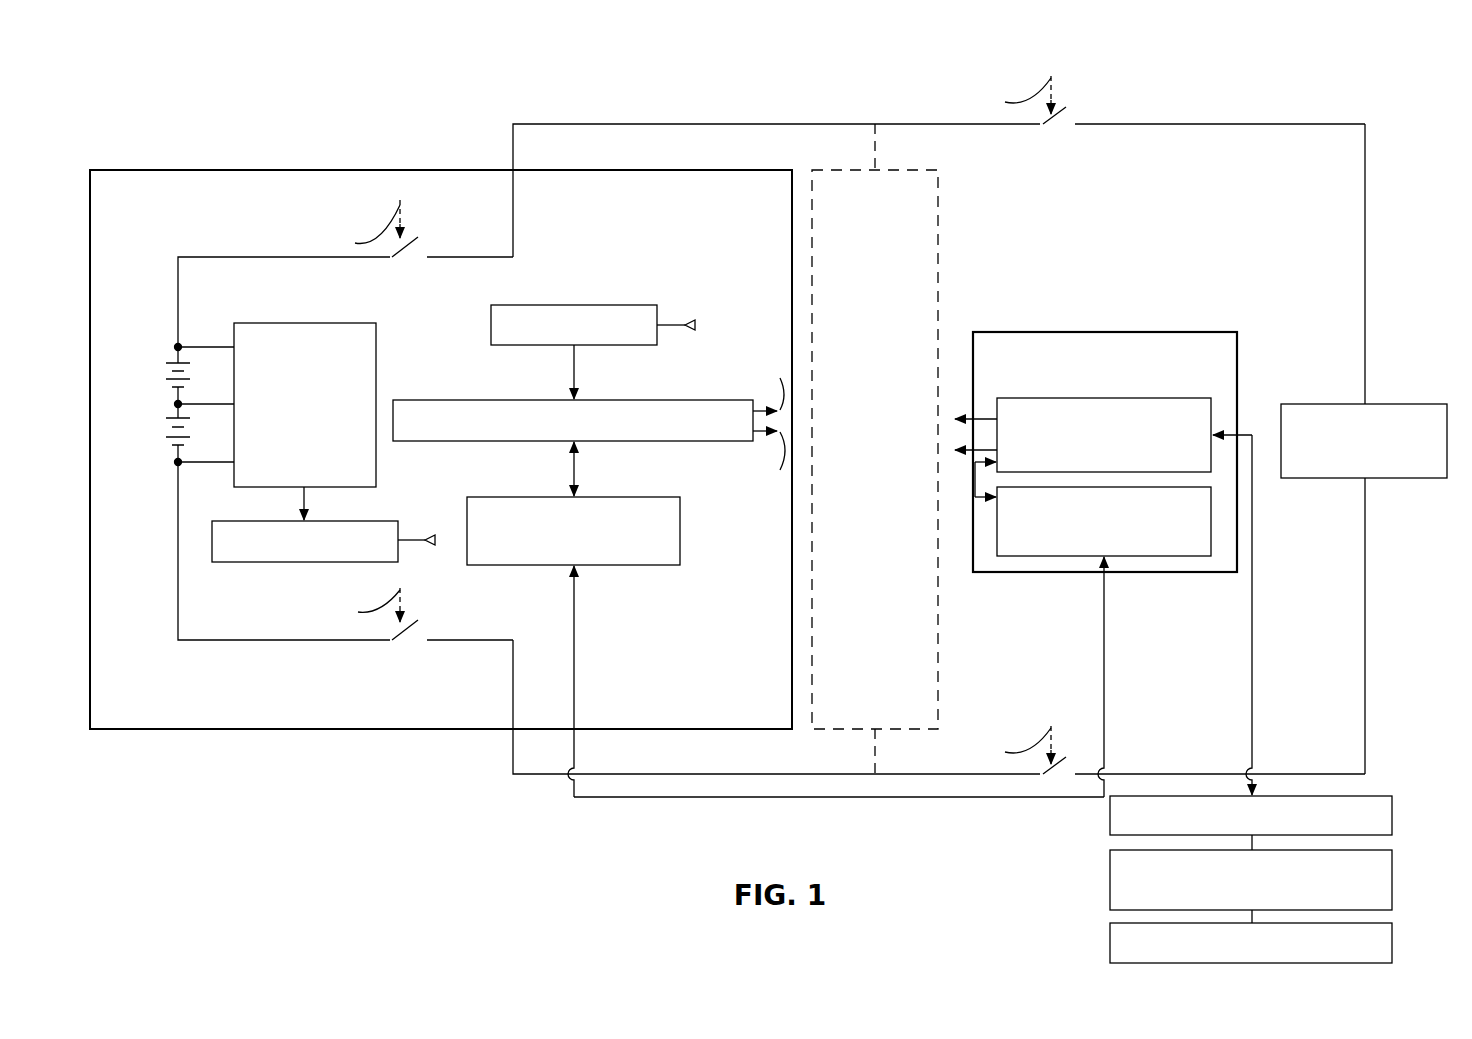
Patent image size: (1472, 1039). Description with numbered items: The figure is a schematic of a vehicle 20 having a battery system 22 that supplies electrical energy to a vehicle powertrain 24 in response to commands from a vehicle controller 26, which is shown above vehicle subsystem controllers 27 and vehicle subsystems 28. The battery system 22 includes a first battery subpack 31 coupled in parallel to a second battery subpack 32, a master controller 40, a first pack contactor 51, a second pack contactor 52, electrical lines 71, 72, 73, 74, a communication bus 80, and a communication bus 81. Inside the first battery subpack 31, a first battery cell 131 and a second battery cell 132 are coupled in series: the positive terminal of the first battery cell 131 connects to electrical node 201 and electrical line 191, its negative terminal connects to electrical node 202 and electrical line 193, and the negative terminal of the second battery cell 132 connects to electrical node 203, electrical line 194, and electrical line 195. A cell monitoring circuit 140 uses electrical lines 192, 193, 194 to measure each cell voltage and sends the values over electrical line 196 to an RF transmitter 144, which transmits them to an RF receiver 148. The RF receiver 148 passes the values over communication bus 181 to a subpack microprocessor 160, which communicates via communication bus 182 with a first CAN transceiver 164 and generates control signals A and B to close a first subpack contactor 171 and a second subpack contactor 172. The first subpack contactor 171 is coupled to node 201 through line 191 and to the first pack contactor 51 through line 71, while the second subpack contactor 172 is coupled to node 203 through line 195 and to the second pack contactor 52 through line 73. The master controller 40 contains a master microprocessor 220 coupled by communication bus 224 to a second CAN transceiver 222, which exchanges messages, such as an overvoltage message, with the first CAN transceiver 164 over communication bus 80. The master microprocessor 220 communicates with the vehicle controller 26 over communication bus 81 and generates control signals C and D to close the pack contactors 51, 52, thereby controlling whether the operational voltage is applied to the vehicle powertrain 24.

The vehicle 20 is at (1340, 84).
The battery system 22 is at (1208, 122).
The vehicle powertrain 24 is at (1333, 403).
The vehicle controller 26 is at (1392, 815).
The vehicle subsystem controllers 27 is at (1392, 877).
The vehicle subsystems 28 is at (1392, 940).
The first battery subpack 31 is at (146, 168).
The second battery subpack 32 is at (938, 200).
The master controller 40 is at (1100, 332).
The first pack contactor 51 is at (1058, 128).
The second pack contactor 52 is at (1054, 770).
The electrical line 71 is at (572, 122).
The electrical line 72 is at (1365, 202).
The electrical line 73 is at (895, 772).
The electrical line 74 is at (1365, 702).
The communication bus 80 is at (572, 590).
The communication bus 81 is at (1253, 625).
The first battery cell 131 is at (176, 362).
The second battery cell 132 is at (170, 418).
The cell monitoring circuit 140 is at (376, 342).
The RF transmitter 144 is at (212, 548).
The RF receiver 148 is at (588, 305).
The subpack microprocessor 160 is at (700, 398).
The first CAN transceiver 164 is at (625, 566).
The first subpack contactor 171 is at (406, 262).
The second subpack contactor 172 is at (396, 645).
The communication bus 181 is at (580, 376).
The communication bus 182 is at (580, 476).
The electrical line 191 is at (242, 257).
The electrical line 192 is at (218, 345).
The electrical line 193 is at (197, 408).
The electrical line 194 is at (210, 462).
The electrical line 195 is at (272, 640).
The electrical line 196 is at (310, 505).
The electrical node 201 is at (176, 345).
The electrical node 202 is at (176, 402).
The electrical node 203 is at (176, 465).
The master microprocessor 220 is at (1213, 405).
The second CAN transceiver 222 is at (1211, 530).
The communication bus 224 is at (975, 478).